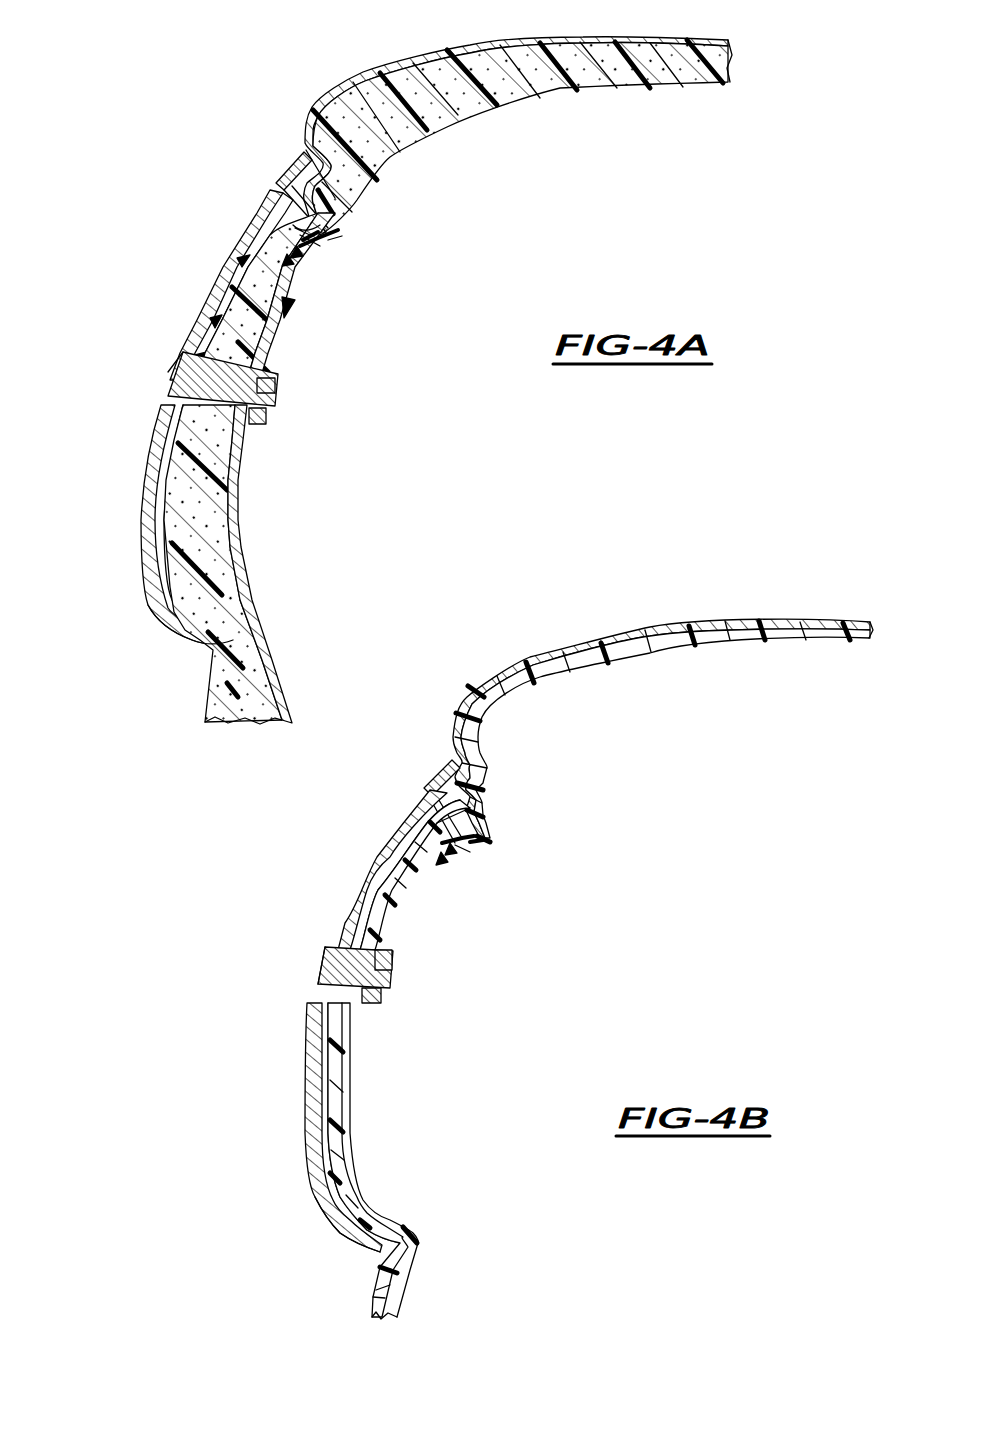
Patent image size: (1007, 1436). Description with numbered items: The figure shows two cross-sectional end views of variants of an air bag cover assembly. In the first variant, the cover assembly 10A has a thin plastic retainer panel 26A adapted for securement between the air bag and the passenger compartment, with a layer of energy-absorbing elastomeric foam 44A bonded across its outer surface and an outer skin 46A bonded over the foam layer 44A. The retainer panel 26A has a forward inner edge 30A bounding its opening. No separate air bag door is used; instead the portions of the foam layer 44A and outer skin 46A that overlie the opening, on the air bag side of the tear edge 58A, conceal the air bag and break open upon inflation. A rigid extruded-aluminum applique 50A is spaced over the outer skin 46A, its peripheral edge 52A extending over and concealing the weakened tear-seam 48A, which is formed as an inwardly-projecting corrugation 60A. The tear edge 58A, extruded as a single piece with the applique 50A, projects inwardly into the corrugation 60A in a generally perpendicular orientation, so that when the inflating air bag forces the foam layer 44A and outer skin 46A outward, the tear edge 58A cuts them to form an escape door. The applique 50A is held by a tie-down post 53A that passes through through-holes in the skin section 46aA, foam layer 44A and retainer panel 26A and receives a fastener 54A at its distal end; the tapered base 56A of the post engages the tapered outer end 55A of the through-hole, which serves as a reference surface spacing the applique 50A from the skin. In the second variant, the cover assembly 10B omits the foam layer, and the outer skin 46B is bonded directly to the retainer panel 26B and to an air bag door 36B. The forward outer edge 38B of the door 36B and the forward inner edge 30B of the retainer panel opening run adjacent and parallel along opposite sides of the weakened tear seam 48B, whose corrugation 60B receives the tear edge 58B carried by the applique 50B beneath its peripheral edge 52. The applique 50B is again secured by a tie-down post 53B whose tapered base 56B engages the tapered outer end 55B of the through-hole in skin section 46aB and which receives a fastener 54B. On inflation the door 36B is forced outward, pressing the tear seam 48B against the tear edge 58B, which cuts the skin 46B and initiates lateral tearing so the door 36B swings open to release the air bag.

In FIG. 4A, the outer skin 46A is at (370, 67).
In FIG. 4A, the foam layer 44A is at (526, 60).
In FIG. 4A, the peripheral edge of applique 52A is at (279, 188).
In FIG. 4A, the forward inner edge of retainer panel opening 30A is at (338, 230).
In FIG. 4A, the tear edge 58A is at (303, 240).
In FIG. 4A, the weakened tear-seam 48A is at (297, 250).
In FIG. 4A, the corrugation 60A is at (287, 257).
In FIG. 4A, the tapered base 56A is at (184, 370).
In FIG. 4A, the tie-down post 53A is at (178, 372).
In FIG. 4A, the tapered outer end of through-hole 55A is at (158, 405).
In FIG. 4A, the fastener 54A is at (270, 420).
In FIG. 4A, the air bag cover assembly 10A is at (250, 503).
In FIG. 4A, the retainer panel 26A is at (247, 573).
In FIG. 4A, the applique 50A is at (143, 513).
In FIG. 4A, the skin section 46aA is at (186, 608).
In FIG. 4B, the outer skin 46B is at (500, 665).
In FIG. 4B, the air bag door 36B is at (718, 640).
In FIG. 4B, the peripheral edge of applique 52 is at (435, 805).
In FIG. 4B, the forward outer edge of air bag door 38B is at (470, 835).
In FIG. 4B, the tear edge 58B is at (483, 840).
In FIG. 4B, the forward inner edge of retainer panel opening 30B is at (447, 845).
In FIG. 4B, the weakened tear seam 48B is at (452, 847).
In FIG. 4B, the corrugation 60B is at (443, 855).
In FIG. 4B, the tapered base 56B is at (345, 961).
In FIG. 4B, the tie-down post 53B is at (330, 970).
In FIG. 4B, the tapered outer end of through-hole 55B is at (303, 1007).
In FIG. 4B, the fastener 54B is at (385, 1007).
In FIG. 4B, the air bag cover assembly 10B is at (363, 1133).
In FIG. 4B, the retainer panel 26B is at (350, 1173).
In FIG. 4B, the applique 50B is at (303, 1103).
In FIG. 4B, the skin section 46aB is at (338, 1200).